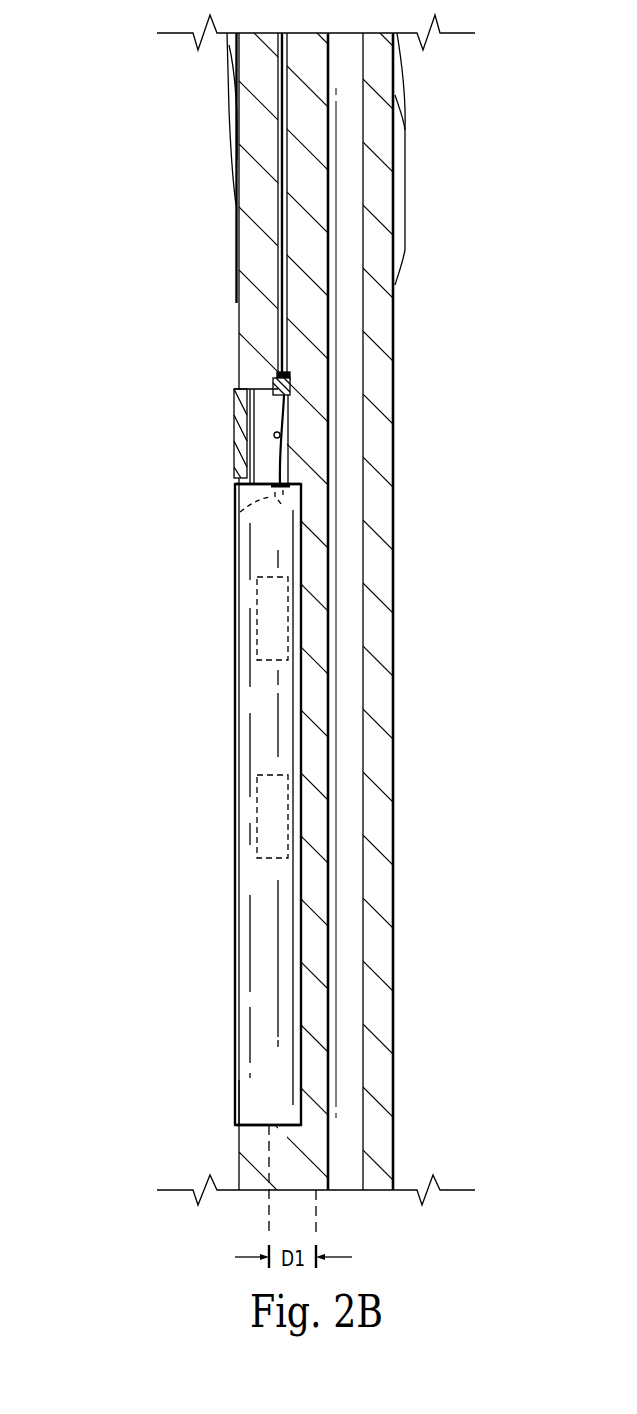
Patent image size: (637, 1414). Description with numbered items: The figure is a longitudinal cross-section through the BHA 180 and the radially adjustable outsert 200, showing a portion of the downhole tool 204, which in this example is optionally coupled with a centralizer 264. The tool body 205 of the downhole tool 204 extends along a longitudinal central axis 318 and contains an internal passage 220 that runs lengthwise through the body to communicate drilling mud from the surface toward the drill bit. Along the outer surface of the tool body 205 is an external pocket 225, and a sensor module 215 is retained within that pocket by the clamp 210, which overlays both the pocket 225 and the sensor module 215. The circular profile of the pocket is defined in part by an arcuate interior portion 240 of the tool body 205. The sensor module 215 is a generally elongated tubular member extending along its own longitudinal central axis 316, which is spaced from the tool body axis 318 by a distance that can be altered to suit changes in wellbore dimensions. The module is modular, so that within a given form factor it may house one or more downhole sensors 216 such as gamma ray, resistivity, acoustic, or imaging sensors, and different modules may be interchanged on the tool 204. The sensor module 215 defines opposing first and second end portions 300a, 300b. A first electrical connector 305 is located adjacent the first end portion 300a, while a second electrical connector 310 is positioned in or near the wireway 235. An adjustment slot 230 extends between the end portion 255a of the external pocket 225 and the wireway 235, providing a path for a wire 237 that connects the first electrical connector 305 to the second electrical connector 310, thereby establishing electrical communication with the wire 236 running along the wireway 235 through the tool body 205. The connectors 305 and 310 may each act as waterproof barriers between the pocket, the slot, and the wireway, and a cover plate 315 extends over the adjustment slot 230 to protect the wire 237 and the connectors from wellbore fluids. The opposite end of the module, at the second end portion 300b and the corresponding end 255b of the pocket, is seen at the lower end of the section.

The BHA 180 is at (92, 56).
The radially adjustable outsert 200 is at (180, 804).
The downhole tool 204 is at (405, 323).
The tool body 205 is at (396, 1017).
The clamp 210 is at (226, 630).
The sensor module 215 is at (257, 1000).
The downhole sensor 216 is at (257, 597).
The internal passage 220 is at (365, 600).
The external pocket 225 is at (300, 872).
The adjustment slot 230 is at (273, 415).
The wireway 235 is at (280, 202).
The wire 236 is at (280, 83).
The wire 237 is at (277, 453).
The arcuate interior portion of the tool body 240 is at (300, 686).
The end portion of the external pocket 255a is at (300, 490).
The lower end of tool 255b is at (263, 1125).
The centralizer 264 is at (399, 197).
The first end portion 300a is at (250, 493).
The second end portion 300b is at (250, 1085).
The first electrical connector 305 is at (240, 512).
The second electrical connector 310 is at (277, 373).
The cover plate 315 is at (236, 400).
The longitudinal central axis of the sensor module 316 is at (267, 1211).
The longitudinal central axis of the tool body 318 is at (318, 1211).